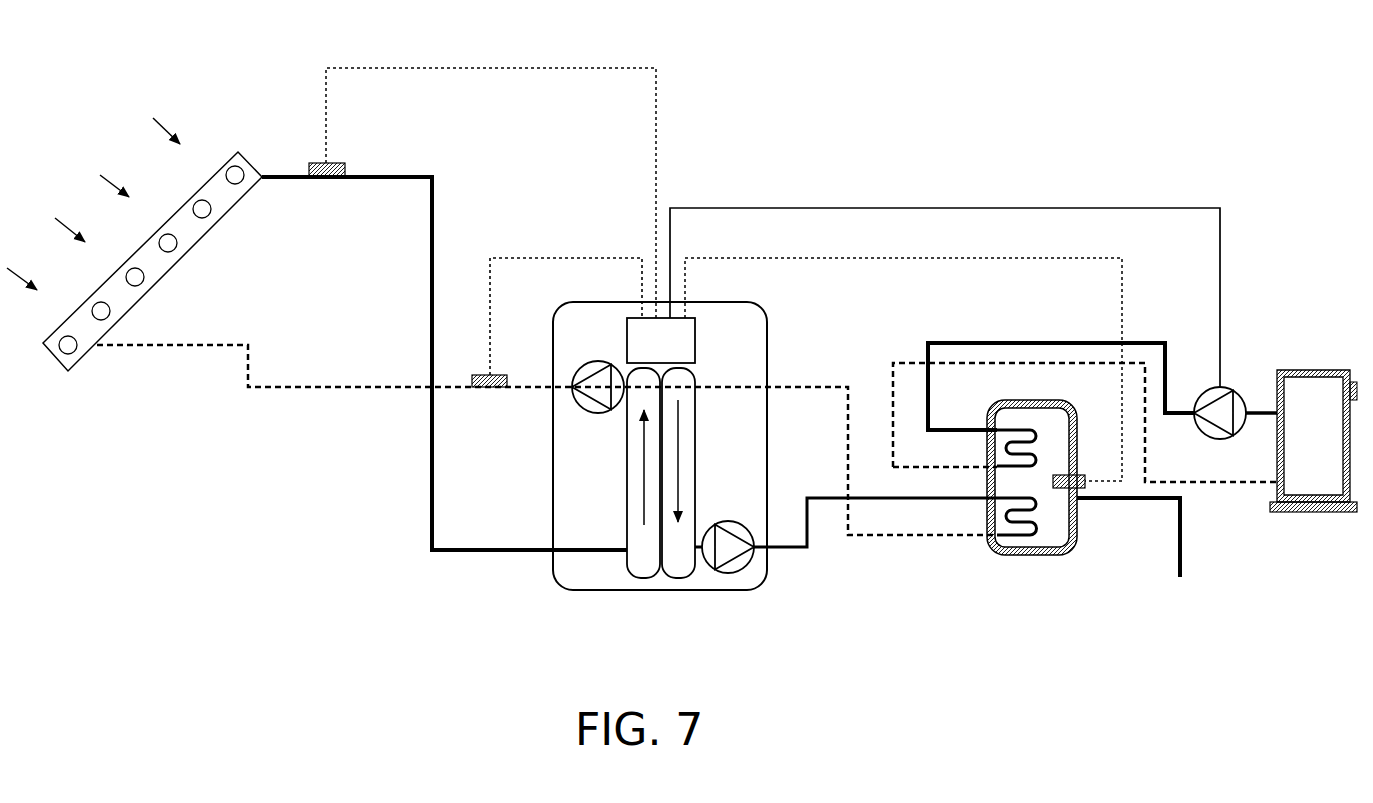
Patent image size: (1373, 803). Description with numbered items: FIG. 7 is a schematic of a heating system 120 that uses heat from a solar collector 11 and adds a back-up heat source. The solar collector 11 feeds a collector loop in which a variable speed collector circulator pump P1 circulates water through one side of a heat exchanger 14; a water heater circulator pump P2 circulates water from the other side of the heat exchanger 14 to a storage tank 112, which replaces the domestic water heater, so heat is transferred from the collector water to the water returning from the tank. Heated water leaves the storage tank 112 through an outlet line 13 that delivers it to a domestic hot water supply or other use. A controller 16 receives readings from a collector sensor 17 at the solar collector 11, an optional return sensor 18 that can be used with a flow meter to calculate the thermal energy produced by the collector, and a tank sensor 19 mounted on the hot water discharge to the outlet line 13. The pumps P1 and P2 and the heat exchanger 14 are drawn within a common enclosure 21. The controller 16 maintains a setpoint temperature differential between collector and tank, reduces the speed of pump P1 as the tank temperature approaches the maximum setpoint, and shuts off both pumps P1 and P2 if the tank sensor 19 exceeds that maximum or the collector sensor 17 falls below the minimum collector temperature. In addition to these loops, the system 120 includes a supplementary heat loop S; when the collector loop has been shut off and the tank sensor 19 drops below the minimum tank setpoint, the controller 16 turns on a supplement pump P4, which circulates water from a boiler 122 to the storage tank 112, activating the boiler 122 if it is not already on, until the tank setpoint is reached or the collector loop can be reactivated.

The solar collector 11 is at (222, 124).
The collector sensor 17 is at (343, 163).
The return sensor 18 is at (505, 375).
The controller 16 is at (627, 333).
The heat transfer module housing 21 is at (559, 588).
The heat exchanger 14 is at (641, 568).
The collector circulator pump P1 is at (598, 403).
The water heater circulator pump P2 is at (728, 535).
The supplement pump P4 is at (1220, 427).
The storage tank 112 is at (1053, 557).
The tank sensor 19 is at (1080, 475).
The outlet line 13 is at (1183, 521).
The supplementary heat loop S is at (1140, 342).
The boiler 122 is at (1306, 370).
The system 120 is at (931, 104).